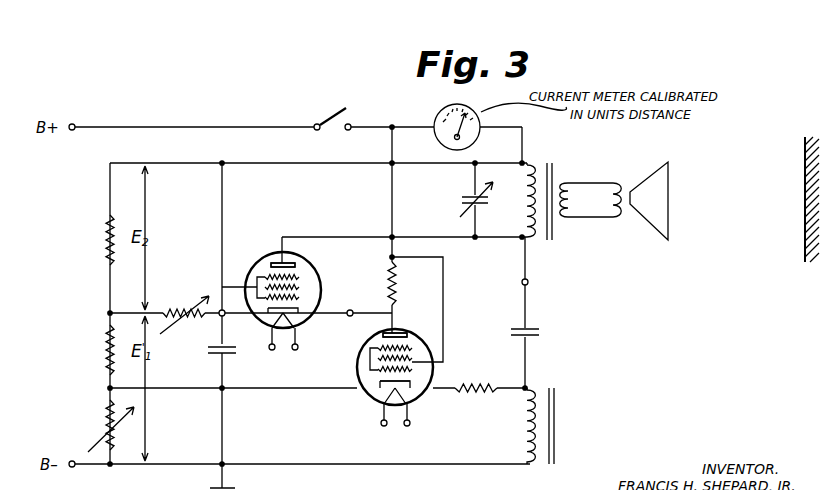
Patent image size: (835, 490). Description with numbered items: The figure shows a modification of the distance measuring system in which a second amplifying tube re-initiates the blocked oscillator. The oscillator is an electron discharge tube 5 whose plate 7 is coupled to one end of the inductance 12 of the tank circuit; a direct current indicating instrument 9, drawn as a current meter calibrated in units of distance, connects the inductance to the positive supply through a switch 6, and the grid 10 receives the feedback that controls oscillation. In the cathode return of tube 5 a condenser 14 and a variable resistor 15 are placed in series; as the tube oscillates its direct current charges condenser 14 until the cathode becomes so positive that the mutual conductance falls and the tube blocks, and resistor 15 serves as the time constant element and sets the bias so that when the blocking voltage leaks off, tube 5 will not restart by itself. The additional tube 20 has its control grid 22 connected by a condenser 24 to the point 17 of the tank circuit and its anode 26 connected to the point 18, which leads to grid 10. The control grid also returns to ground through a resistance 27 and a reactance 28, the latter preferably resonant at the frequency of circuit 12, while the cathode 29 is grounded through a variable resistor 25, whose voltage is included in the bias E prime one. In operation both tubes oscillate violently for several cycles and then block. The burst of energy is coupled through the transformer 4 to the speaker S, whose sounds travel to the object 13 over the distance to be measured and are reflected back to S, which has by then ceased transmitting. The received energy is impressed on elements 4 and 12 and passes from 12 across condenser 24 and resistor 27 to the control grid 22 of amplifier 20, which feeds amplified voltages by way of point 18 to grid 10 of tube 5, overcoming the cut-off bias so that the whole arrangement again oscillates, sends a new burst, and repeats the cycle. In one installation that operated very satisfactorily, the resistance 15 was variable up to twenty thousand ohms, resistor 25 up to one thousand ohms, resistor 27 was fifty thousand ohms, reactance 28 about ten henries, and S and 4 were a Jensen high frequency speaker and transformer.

The transformer 4 is at (556, 238).
The electron discharge tube 5 is at (257, 266).
The switch 6 is at (330, 116).
The plate 7 is at (276, 250).
The direct current indicating instrument 9 is at (436, 143).
The grid 10 is at (299, 297).
The inductance 12 is at (503, 230).
The object 13 is at (805, 250).
The condenser 14 is at (230, 360).
The resistor 15 is at (188, 308).
The point 17 is at (529, 282).
The point 18 is at (352, 309).
The additional tube 20 is at (358, 375).
The control grid 22 is at (412, 369).
The condenser 24 is at (541, 332).
The variable resistor 25 is at (109, 420).
The anode 26 is at (364, 346).
The resistance 27 is at (472, 394).
The reactance 28 is at (541, 392).
The cathode 29 is at (378, 398).
The speaker S is at (637, 217).